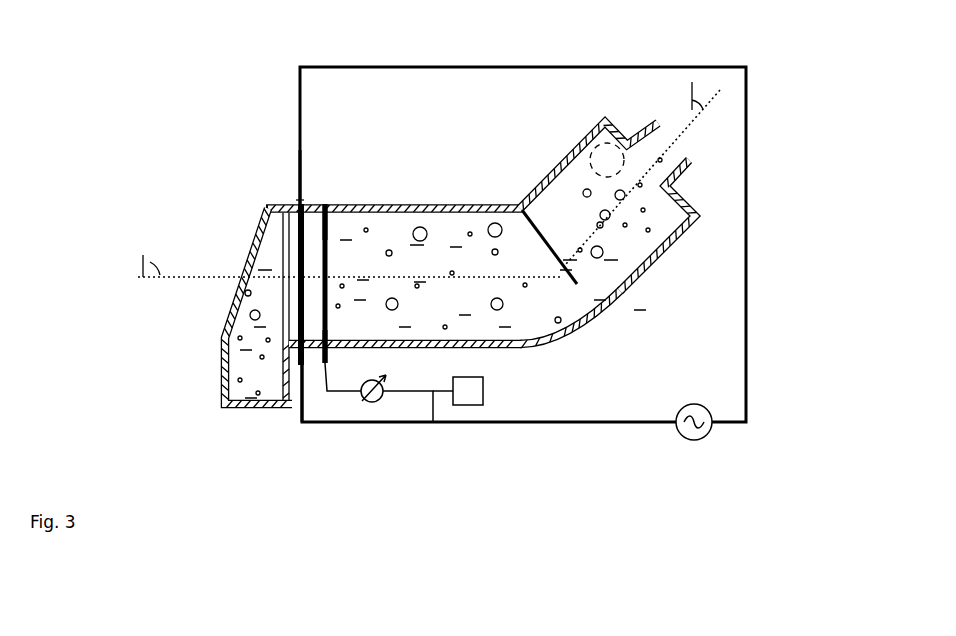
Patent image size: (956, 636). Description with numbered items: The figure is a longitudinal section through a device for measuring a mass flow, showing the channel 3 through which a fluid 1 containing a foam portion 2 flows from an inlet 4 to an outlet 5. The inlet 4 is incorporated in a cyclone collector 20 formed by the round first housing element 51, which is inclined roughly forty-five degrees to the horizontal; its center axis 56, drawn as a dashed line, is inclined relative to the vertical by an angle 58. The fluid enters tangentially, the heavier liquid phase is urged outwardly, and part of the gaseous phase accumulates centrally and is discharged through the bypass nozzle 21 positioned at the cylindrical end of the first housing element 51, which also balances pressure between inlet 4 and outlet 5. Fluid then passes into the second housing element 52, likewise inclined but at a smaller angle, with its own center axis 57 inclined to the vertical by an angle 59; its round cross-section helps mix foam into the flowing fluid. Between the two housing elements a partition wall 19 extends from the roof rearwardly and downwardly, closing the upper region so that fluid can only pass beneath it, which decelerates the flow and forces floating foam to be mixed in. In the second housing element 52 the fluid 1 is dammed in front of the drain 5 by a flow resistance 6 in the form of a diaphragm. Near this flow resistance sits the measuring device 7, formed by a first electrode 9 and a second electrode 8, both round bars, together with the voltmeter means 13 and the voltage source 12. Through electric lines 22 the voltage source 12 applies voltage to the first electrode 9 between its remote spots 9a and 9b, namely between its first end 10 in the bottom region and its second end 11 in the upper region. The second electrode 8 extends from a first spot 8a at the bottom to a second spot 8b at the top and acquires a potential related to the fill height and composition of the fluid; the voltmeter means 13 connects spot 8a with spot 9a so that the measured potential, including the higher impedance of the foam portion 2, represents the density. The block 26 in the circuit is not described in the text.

The fluid 1 is at (440, 309).
The foam portion 2 is at (598, 258).
The channel 3 is at (533, 350).
The inlet 4 is at (590, 163).
The outlet 5 is at (222, 380).
The flow resistance 6 is at (277, 250).
The measuring device 7 is at (293, 183).
The second electrode 8 is at (342, 216).
The first spot of second electrode 8a is at (329, 335).
The second spot of second electrode 8b is at (329, 216).
The first electrode 9 is at (268, 228).
The first spot of first electrode 9a is at (295, 330).
The second spot of first electrode 9b is at (265, 210).
The first end of first electrode 10 is at (300, 372).
The second end of first electrode 11 is at (297, 197).
The voltage source 12 is at (694, 441).
The voltmeter means 13 is at (380, 399).
The partition wall 19 is at (520, 206).
The cyclone collector 20 is at (688, 243).
The bypass nozzle 21 is at (648, 121).
The electric lines 22 is at (507, 66).
The evaluation unit 26 is at (470, 405).
The first housing element 51 is at (653, 278).
The second housing element 52 is at (440, 204).
The center axis 56 is at (684, 138).
The center axis 57 is at (170, 278).
The angle 58 is at (694, 84).
The angle 59 is at (148, 262).